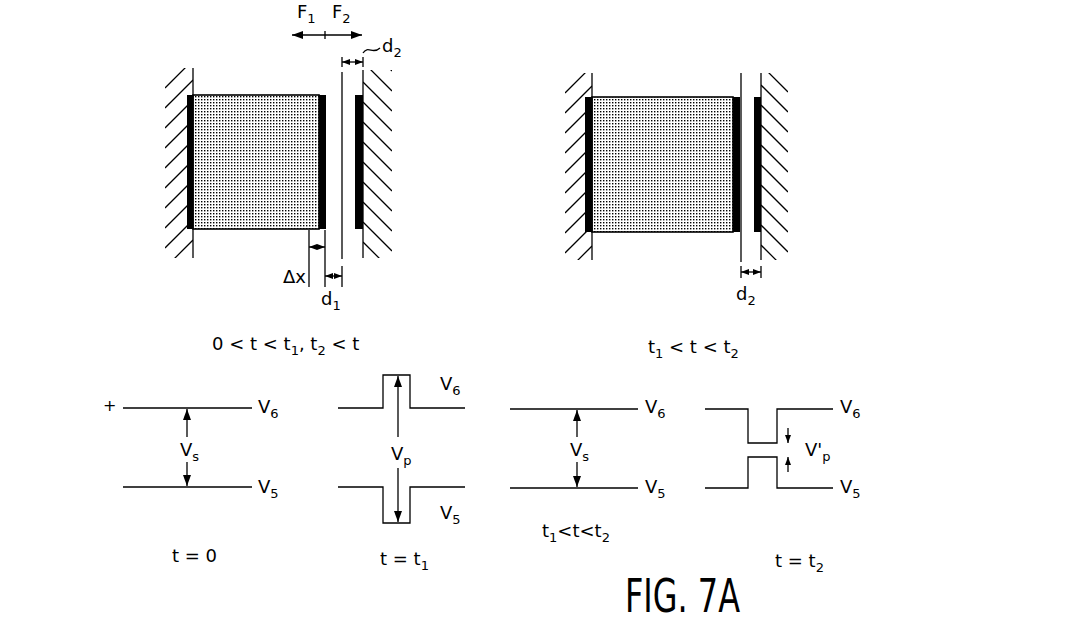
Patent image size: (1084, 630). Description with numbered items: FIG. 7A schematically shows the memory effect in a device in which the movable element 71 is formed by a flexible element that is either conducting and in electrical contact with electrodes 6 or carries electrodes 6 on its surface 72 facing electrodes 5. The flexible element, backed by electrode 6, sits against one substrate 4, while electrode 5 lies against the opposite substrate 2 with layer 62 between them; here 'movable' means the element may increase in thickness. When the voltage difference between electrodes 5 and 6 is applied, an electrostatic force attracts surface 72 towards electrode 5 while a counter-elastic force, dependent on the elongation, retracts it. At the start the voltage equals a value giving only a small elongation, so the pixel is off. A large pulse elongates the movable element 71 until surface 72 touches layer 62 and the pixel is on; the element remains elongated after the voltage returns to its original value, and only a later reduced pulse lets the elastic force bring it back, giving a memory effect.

The second substrate 2 is at (590, 157).
The first substrate 4 is at (367, 176).
The electrode 5 is at (364, 138).
The electrode 6 is at (185, 134).
The layer 62 is at (352, 247).
The movable element 71 is at (247, 202).
The surface 72 is at (326, 213).